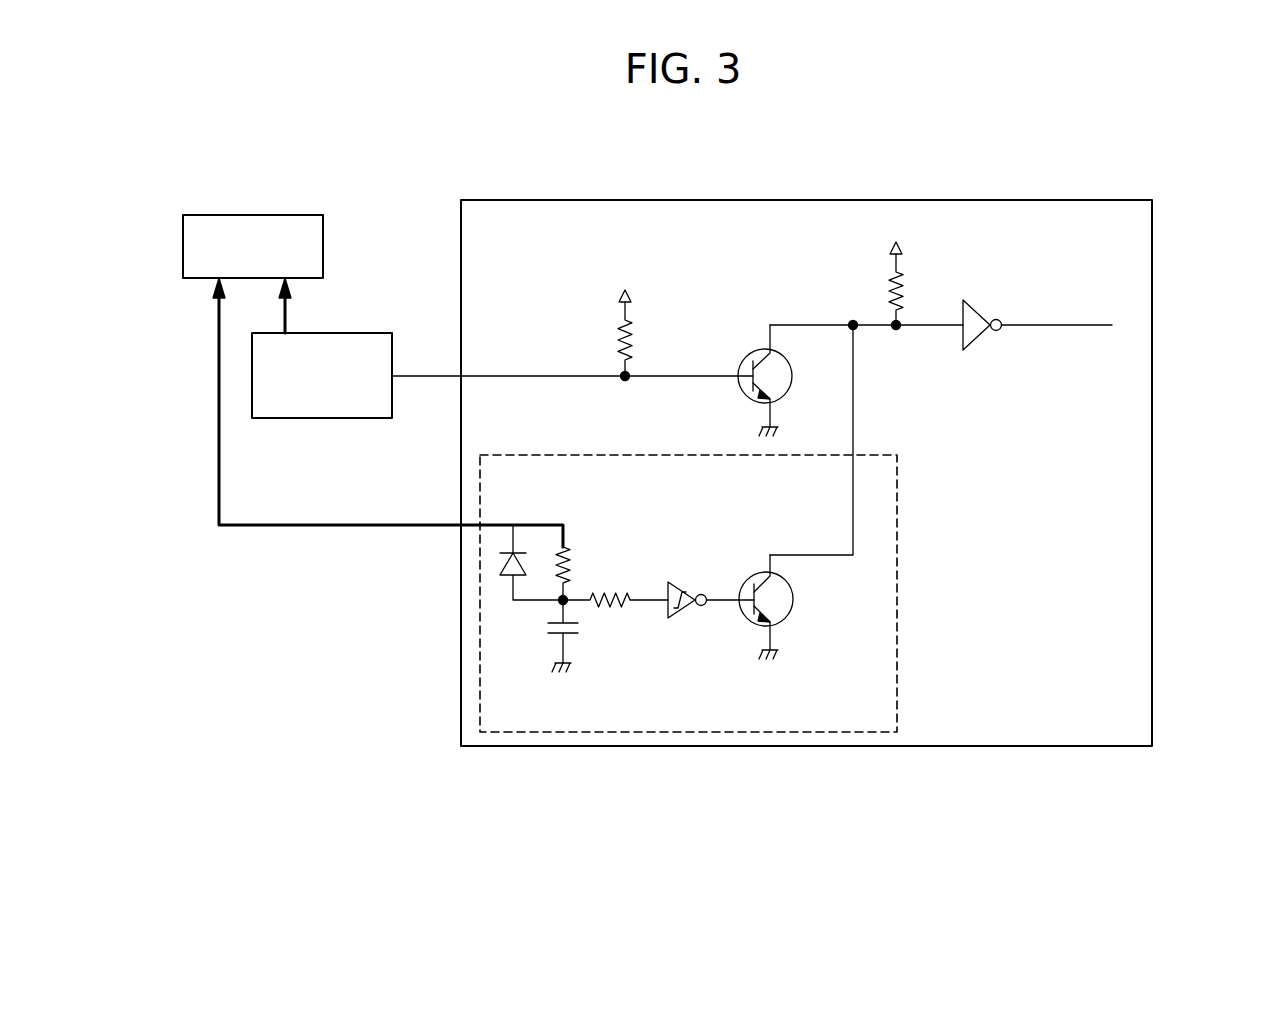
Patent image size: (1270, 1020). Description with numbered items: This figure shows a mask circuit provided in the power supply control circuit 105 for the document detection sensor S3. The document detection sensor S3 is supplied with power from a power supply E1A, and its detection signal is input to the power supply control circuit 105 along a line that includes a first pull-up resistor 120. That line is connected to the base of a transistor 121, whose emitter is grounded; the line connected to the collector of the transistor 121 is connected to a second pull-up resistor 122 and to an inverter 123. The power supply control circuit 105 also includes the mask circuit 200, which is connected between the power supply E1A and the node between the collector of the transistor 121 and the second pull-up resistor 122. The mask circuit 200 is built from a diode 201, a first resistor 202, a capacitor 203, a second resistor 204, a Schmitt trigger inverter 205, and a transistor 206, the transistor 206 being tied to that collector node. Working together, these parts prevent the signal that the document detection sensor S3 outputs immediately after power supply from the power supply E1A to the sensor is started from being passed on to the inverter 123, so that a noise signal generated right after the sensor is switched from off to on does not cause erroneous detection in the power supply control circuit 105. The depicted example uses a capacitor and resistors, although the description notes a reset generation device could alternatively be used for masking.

The power supply E1A is at (255, 214).
The document detection sensor S3 is at (342, 332).
The power supply control circuit 105 is at (1152, 718).
The mask circuit 200 is at (820, 733).
The first pull-up resistor 120 is at (600, 344).
The transistor 121 is at (753, 336).
The second pull-up resistor 122 is at (906, 268).
The inverter 123 is at (990, 352).
The diode 201 is at (503, 583).
The first resistor 202 is at (580, 548).
The capacitor 203 is at (540, 632).
The second resistor 204 is at (612, 613).
The Schmitt trigger inverter 205 is at (693, 614).
The transistor 206 is at (760, 556).